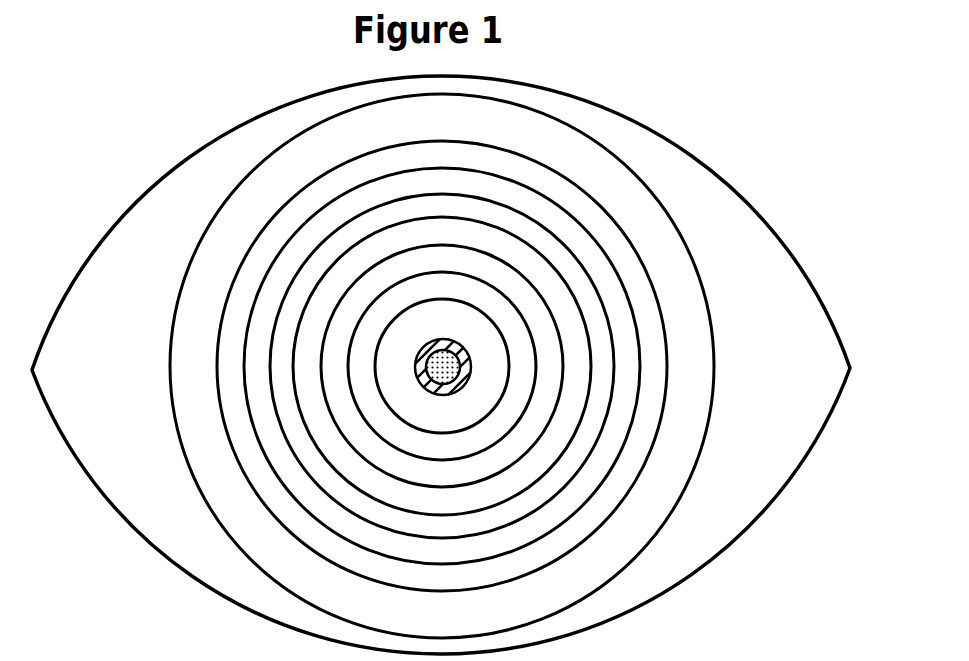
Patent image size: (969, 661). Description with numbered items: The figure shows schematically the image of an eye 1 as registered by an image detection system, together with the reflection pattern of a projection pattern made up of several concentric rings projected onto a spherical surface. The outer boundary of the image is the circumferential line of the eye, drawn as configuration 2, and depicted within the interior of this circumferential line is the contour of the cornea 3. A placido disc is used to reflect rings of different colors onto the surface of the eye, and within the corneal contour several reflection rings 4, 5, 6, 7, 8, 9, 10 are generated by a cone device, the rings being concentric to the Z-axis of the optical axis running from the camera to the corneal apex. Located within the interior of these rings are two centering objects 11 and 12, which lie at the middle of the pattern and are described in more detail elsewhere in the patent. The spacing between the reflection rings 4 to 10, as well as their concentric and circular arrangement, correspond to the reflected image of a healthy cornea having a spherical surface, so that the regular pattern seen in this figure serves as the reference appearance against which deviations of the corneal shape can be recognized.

The eye 1 is at (140, 152).
The configuration 2 is at (267, 117).
The cornea 3 is at (170, 334).
The reflection ring 4 is at (510, 363).
The reflection ring 5 is at (537, 363).
The reflection ring 6 is at (562, 363).
The reflection ring 7 is at (589, 363).
The reflection ring 8 is at (614, 363).
The reflection ring 9 is at (640, 363).
The reflection ring 10 is at (665, 363).
The centering object 11 is at (444, 395).
The centering object 12 is at (458, 342).